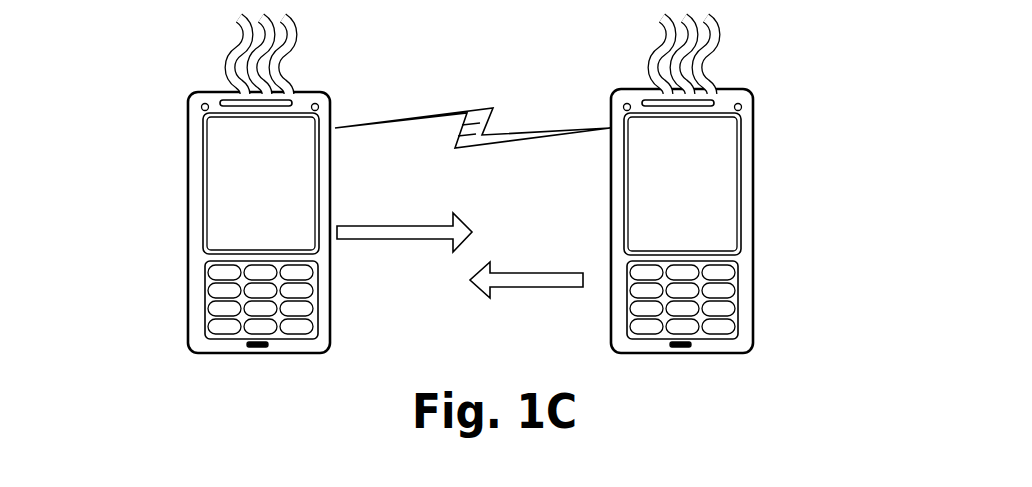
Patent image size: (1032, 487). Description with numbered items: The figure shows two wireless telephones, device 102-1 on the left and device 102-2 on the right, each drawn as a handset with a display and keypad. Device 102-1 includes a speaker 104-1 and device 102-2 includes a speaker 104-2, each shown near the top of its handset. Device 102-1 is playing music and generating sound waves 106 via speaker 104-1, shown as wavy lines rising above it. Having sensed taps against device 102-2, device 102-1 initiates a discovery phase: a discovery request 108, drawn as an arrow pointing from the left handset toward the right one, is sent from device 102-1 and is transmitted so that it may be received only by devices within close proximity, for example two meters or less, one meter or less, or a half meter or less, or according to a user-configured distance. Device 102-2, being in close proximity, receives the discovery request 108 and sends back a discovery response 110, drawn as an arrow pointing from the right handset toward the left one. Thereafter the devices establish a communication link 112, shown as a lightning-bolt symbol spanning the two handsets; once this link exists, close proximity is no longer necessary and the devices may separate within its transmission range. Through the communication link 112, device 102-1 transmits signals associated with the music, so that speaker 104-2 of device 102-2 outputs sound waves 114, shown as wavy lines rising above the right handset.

The device 102-1 is at (188, 224).
The device 102-2 is at (753, 222).
The speaker 104-1 is at (222, 103).
The speaker 104-2 is at (713, 100).
The sound waves 106 is at (293, 52).
The sound waves 114 is at (668, 33).
The discovery request 108 is at (404, 209).
The discovery response 110 is at (533, 310).
The communication link 112 is at (472, 113).